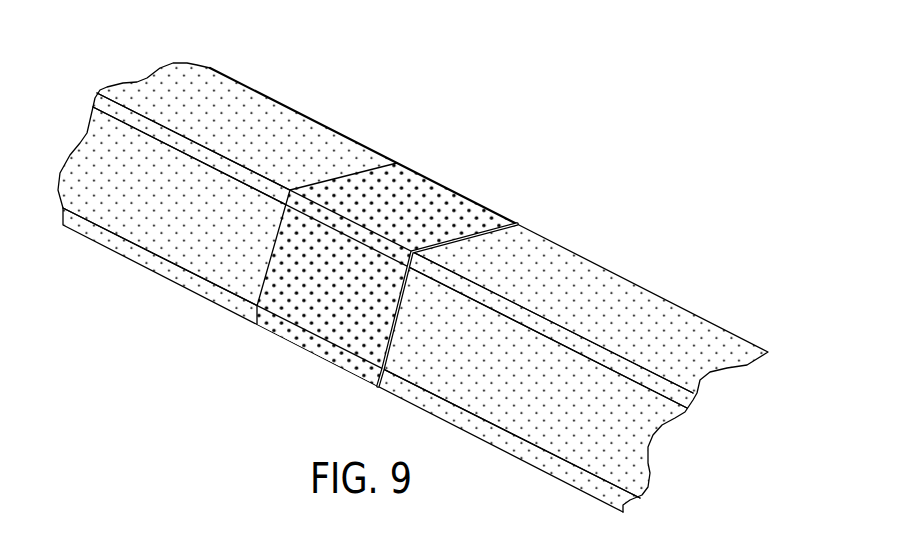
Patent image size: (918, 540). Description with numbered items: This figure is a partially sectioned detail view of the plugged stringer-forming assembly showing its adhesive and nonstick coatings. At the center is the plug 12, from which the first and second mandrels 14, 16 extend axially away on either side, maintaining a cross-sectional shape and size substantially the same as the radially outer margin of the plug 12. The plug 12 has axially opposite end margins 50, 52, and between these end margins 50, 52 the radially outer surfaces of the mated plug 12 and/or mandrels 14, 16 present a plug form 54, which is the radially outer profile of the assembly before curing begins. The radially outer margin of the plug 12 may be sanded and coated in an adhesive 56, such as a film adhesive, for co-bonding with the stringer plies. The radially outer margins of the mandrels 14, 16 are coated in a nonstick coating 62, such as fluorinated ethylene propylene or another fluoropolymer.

The plug 12 is at (302, 369).
The first mandrel 14 is at (158, 301).
The second mandrel 16 is at (638, 247).
The end margin 50 is at (401, 149).
The end margin 52 is at (526, 219).
The plug form 54 is at (470, 170).
The adhesive 56 is at (424, 207).
The nonstick coating 62 is at (188, 87).